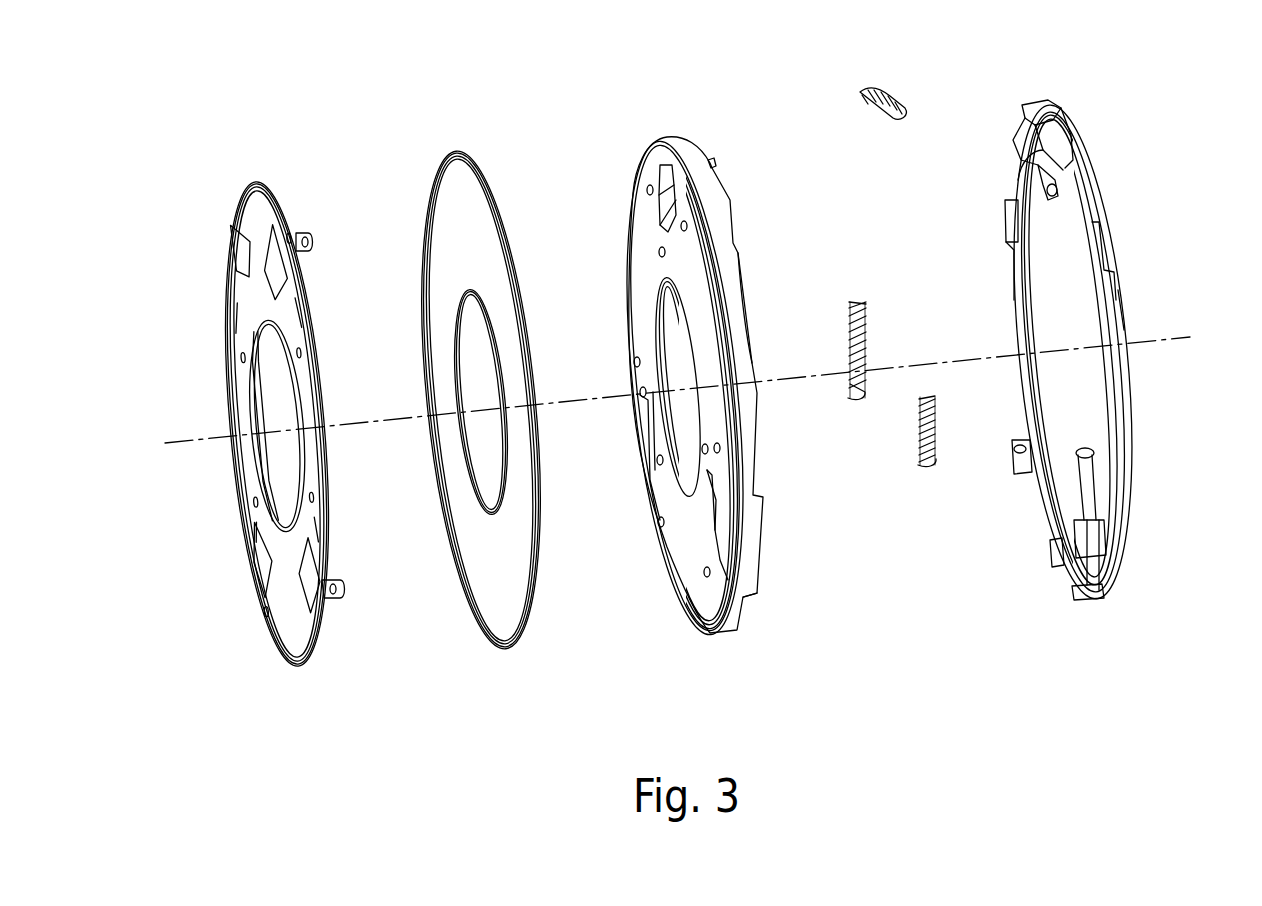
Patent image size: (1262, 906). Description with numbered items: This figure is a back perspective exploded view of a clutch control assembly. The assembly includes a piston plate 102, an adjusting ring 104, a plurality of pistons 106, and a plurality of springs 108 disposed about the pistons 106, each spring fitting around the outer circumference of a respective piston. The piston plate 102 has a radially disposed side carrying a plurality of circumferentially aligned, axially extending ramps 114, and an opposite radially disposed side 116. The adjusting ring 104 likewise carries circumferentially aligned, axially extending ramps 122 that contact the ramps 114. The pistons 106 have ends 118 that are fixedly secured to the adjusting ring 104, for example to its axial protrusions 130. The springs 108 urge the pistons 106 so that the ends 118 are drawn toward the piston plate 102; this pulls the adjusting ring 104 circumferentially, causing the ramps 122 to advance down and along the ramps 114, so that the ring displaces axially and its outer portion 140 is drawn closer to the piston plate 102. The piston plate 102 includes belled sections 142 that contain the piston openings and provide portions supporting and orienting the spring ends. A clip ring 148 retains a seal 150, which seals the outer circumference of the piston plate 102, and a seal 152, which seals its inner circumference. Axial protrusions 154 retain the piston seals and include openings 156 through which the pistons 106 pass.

The piston plate 102 is at (676, 135).
The adjusting ring 104 is at (1049, 98).
The pistons 106 is at (1045, 505).
The springs 108 is at (892, 90).
The ramps 114 is at (732, 212).
The radially disposed side 116 is at (640, 206).
The ends 118 is at (1012, 232).
The ramps 122 is at (1106, 240).
The axial protrusions 130 is at (1072, 600).
The outer portion 140 is at (1122, 298).
The belled sections 142 is at (656, 172).
The clip ring 148 is at (241, 187).
The seal 150 is at (455, 155).
The seal 152 is at (497, 512).
The axial protrusions 154 is at (300, 240).
The openings 156 is at (340, 586).